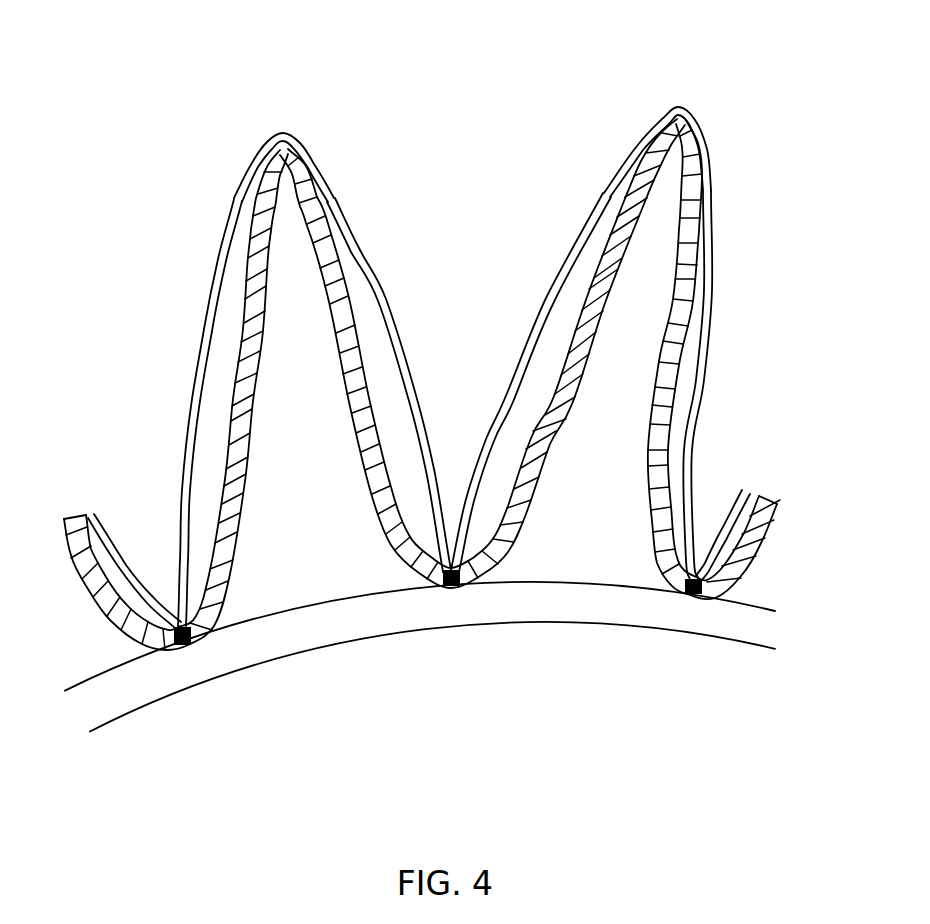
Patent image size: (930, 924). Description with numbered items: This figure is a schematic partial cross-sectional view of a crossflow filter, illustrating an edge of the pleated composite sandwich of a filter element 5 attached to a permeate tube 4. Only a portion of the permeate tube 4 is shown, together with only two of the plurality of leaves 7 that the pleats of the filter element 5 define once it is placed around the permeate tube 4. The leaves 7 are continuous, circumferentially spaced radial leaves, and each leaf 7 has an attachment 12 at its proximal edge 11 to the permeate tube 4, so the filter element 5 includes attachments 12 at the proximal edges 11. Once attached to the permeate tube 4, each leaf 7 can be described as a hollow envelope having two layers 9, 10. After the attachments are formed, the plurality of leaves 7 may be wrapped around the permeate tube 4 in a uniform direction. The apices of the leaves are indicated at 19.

The permeate tube 4 is at (152, 692).
The filter element 5 is at (157, 124).
The leaves 7 is at (547, 247).
The layer 9 is at (200, 362).
The layer 10 is at (252, 277).
The proximal edge 11 is at (449, 606).
The attachment 12 is at (687, 592).
The apices 19 is at (649, 97).